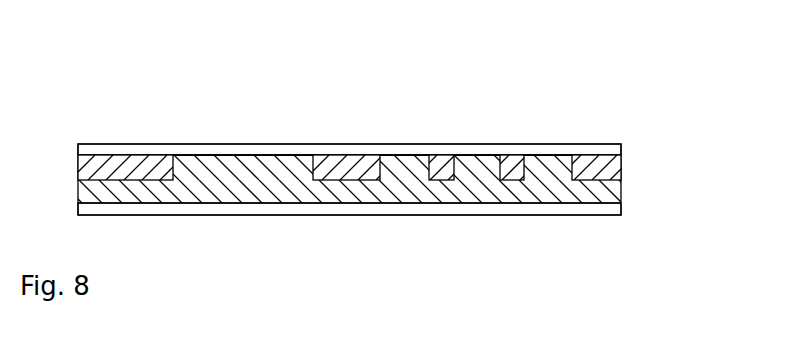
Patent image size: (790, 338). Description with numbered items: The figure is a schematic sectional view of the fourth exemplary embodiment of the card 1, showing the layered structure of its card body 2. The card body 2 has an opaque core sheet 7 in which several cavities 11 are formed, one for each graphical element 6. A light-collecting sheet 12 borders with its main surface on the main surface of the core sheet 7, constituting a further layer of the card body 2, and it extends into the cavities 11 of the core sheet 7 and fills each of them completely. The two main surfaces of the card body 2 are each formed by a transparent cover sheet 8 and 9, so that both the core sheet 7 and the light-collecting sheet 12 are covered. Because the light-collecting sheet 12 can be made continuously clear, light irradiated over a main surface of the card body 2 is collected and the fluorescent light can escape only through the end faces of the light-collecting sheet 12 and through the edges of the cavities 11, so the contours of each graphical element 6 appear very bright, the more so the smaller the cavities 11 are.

The card 1 is at (313, 130).
The card body 2 is at (113, 140).
The graphical element 6 is at (240, 148).
The core sheet 7 is at (625, 170).
The cover sheet 8 is at (625, 145).
The cover sheet 9 is at (625, 213).
The cavities 11 is at (185, 148).
The light-collecting sheet 12 is at (625, 192).